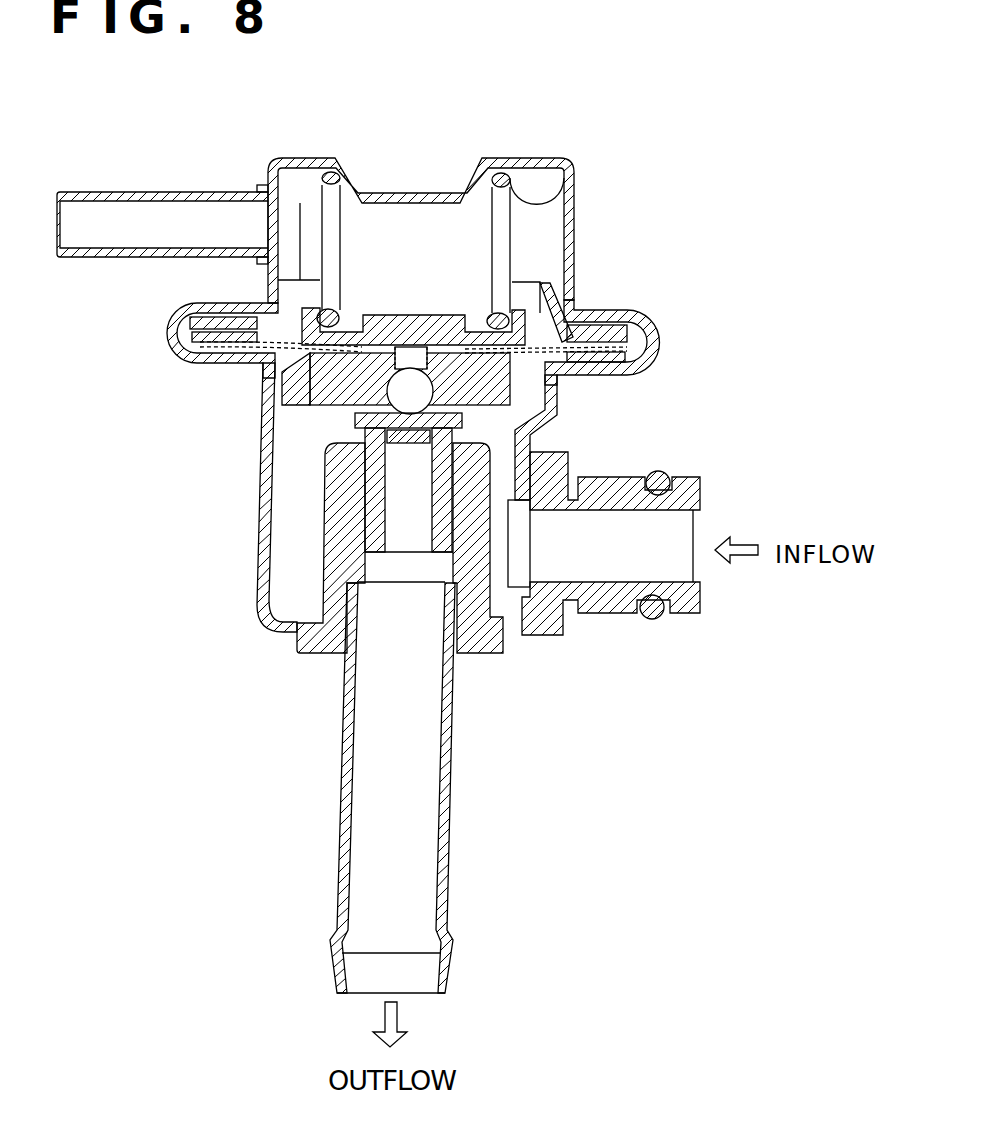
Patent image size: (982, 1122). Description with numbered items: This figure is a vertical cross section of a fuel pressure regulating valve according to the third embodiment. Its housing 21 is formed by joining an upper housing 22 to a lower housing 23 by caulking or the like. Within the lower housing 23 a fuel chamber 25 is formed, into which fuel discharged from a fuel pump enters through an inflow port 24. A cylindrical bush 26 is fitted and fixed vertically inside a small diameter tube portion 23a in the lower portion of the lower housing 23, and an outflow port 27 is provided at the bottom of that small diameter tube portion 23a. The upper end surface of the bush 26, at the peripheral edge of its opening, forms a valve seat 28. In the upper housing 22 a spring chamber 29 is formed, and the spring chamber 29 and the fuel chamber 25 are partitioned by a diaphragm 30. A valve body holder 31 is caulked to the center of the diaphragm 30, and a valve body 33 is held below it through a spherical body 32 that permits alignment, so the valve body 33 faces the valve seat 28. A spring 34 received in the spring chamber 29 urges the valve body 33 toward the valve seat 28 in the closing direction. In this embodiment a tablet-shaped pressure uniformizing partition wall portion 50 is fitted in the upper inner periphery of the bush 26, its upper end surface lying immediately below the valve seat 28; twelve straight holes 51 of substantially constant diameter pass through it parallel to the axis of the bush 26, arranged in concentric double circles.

The housing 21 is at (482, 230).
The upper housing 22 is at (575, 186).
The lower housing 23 is at (262, 541).
The small diameter tube portion 23a is at (337, 577).
The inflow port 24 is at (657, 530).
The fuel chamber 25 is at (505, 428).
The bush 26 is at (450, 527).
The outflow port 27 is at (393, 975).
The valve seat 28 is at (320, 402).
The spring chamber 29 is at (432, 220).
The diaphragm 30 is at (570, 292).
The valve body holder 31 is at (393, 317).
The spherical body 32 is at (410, 396).
The valve body 33 is at (462, 412).
The spring 34 is at (574, 178).
The pressure uniformizing partition wall portion 50 is at (367, 450).
The holes 51 is at (418, 437).